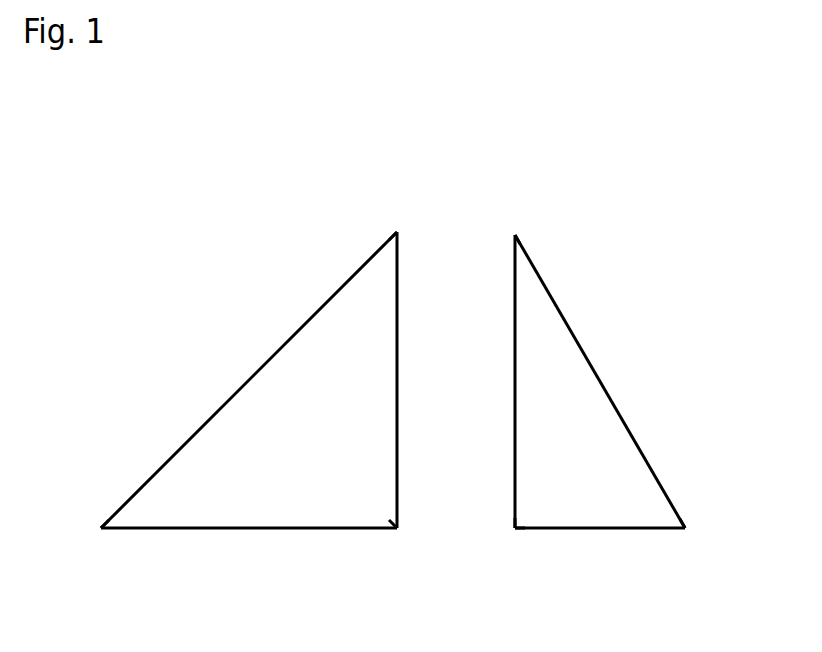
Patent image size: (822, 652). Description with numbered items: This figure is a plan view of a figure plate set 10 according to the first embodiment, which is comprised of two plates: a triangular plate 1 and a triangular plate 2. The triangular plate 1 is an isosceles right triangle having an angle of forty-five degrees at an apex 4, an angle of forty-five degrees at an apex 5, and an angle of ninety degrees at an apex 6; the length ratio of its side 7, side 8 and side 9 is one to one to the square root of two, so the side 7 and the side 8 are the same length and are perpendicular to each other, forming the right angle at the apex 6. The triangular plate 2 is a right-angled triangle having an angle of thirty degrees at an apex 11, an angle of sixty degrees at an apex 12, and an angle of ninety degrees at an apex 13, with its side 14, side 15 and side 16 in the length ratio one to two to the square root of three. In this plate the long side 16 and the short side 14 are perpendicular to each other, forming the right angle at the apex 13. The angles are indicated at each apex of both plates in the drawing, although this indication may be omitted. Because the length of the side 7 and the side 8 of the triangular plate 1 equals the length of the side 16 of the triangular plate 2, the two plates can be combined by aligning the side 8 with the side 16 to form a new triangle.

The triangular plate 1 is at (213, 377).
The triangular plate 2 is at (627, 362).
The figure plate set 10 is at (572, 205).
The apex 4 is at (398, 231).
The apex 5 is at (101, 527).
The apex 6 is at (398, 533).
The side 7 is at (248, 532).
The side 8 is at (398, 432).
The side 9 is at (197, 432).
The apex 11 is at (513, 234).
The apex 12 is at (687, 526).
The apex 13 is at (513, 537).
The side 14 is at (603, 530).
The side 15 is at (632, 432).
The side 16 is at (514, 347).